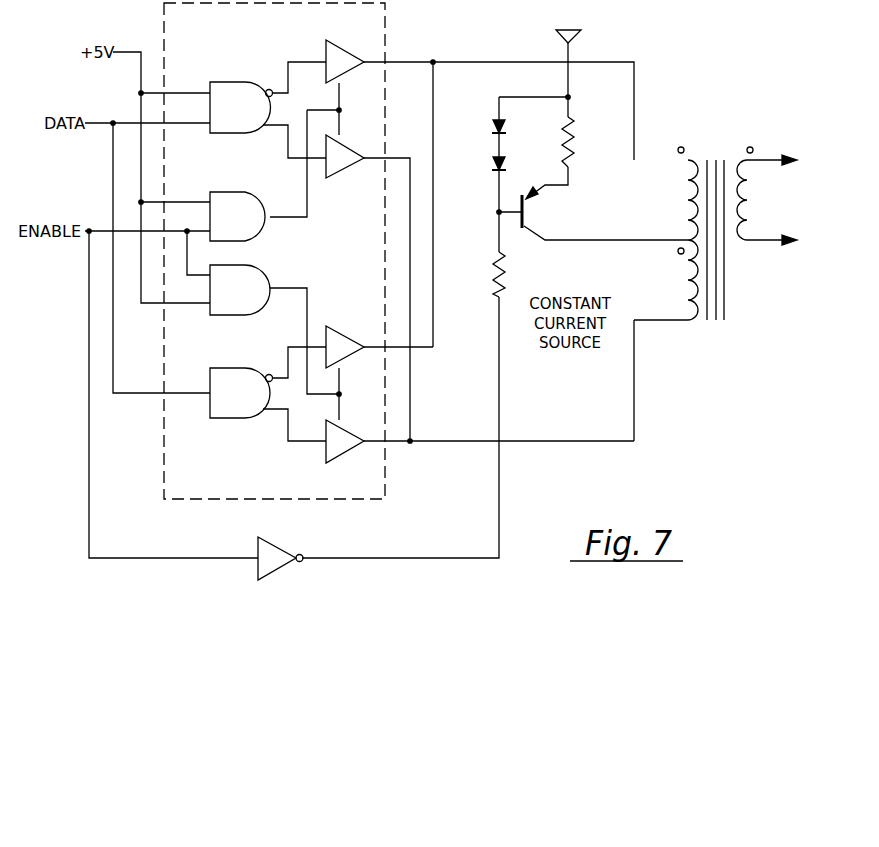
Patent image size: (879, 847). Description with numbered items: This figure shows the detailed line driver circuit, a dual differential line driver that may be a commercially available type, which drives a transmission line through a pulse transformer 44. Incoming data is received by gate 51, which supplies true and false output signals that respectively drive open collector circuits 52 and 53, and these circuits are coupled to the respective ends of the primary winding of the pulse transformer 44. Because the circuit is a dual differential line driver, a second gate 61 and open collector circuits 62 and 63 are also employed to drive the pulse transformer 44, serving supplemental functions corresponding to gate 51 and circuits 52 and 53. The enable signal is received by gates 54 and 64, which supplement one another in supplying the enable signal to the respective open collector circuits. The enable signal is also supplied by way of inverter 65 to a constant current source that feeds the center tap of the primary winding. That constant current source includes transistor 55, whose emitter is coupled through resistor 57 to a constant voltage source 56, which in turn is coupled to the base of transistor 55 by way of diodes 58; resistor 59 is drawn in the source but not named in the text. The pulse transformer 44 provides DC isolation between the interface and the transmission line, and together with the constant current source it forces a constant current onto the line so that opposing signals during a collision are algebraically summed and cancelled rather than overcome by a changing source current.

The pulse transformer 44 is at (752, 145).
The gate 51 is at (232, 82).
The open collector circuit 52 is at (351, 72).
The open collector circuit 53 is at (358, 135).
The gate 54 is at (262, 236).
The transistor 55 is at (525, 210).
The constant voltage source 56 is at (583, 36).
The resistor 57 is at (575, 143).
The diodes 58 is at (491, 128).
The resistor 59 is at (507, 275).
The gate 61 is at (240, 418).
The open collector circuit 62 is at (357, 414).
The open collector circuit 63 is at (351, 357).
The gate 64 is at (266, 283).
The inverter 65 is at (277, 544).